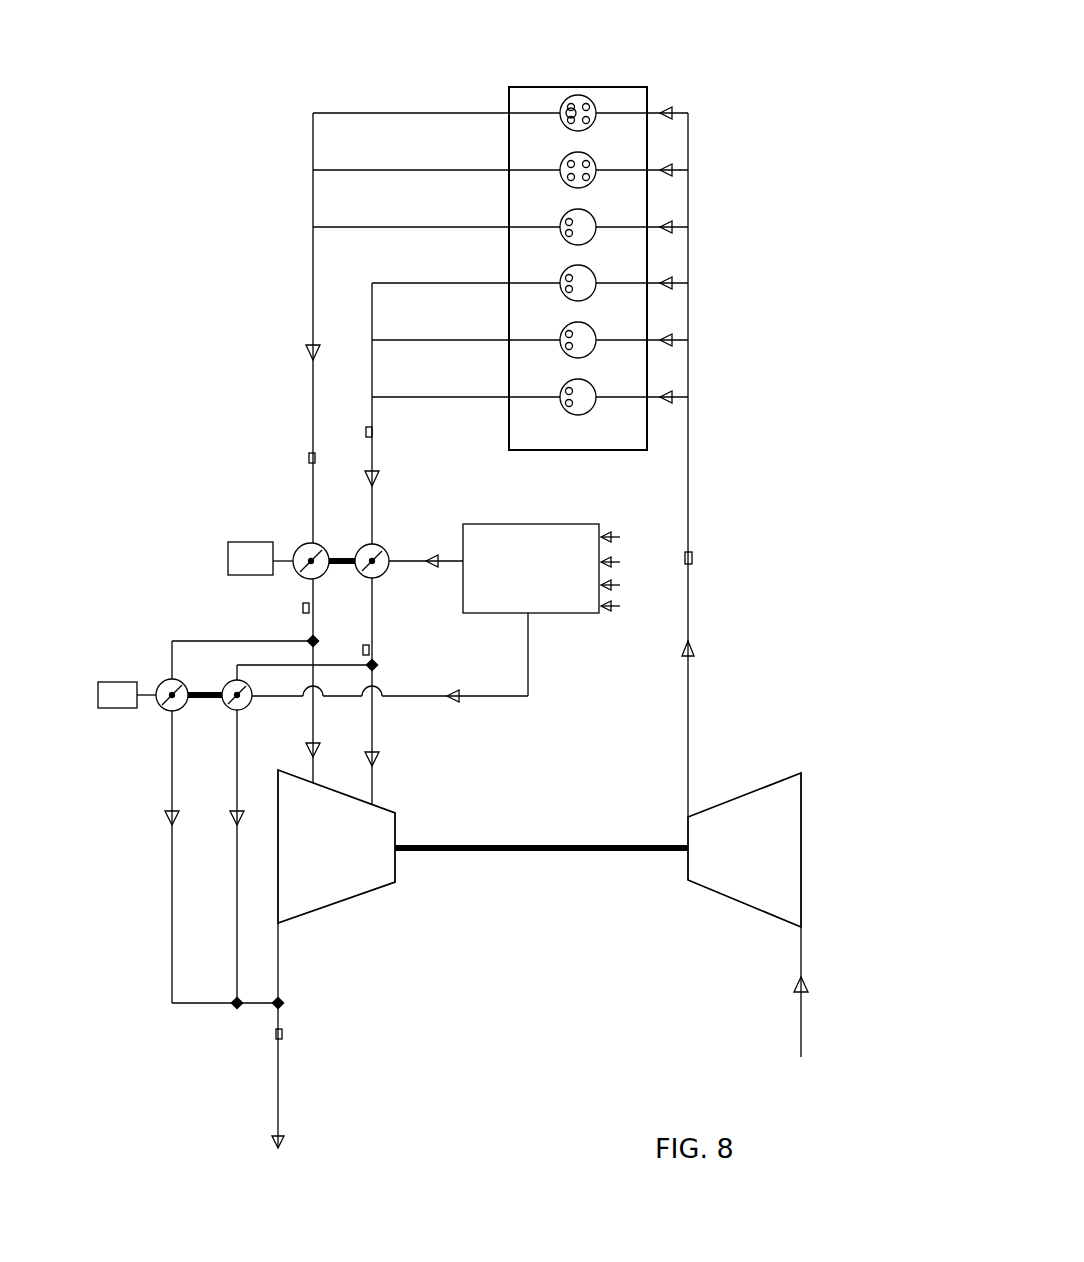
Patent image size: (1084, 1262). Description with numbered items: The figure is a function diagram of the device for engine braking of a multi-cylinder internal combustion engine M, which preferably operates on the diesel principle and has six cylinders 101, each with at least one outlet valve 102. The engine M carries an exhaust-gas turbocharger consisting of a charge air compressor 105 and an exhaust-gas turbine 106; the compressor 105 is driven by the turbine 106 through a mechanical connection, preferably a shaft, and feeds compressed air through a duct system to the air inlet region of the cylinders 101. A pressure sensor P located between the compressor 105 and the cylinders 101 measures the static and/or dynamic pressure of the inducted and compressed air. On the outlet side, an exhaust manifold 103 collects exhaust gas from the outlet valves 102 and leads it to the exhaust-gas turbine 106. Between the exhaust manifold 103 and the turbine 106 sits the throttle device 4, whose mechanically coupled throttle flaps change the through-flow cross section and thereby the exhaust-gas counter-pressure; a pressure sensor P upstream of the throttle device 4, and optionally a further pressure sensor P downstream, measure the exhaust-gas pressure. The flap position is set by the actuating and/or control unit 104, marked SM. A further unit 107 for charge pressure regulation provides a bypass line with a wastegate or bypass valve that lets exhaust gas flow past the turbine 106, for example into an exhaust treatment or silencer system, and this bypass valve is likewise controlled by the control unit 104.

The multi-cylinder engine M is at (648, 100).
The cylinder 101 is at (595, 100).
The outlet valve 102 is at (569, 108).
The exhaust manifold 103 is at (372, 347).
The throttle device 4 is at (297, 529).
The actuating and/or control unit 104 is at (436, 613).
The charge air compressor 105 is at (608, 936).
The exhaust-gas turbine 106 is at (344, 865).
The unit for charge pressure regulation 107 is at (157, 733).
The pressure sensor P is at (365, 432).